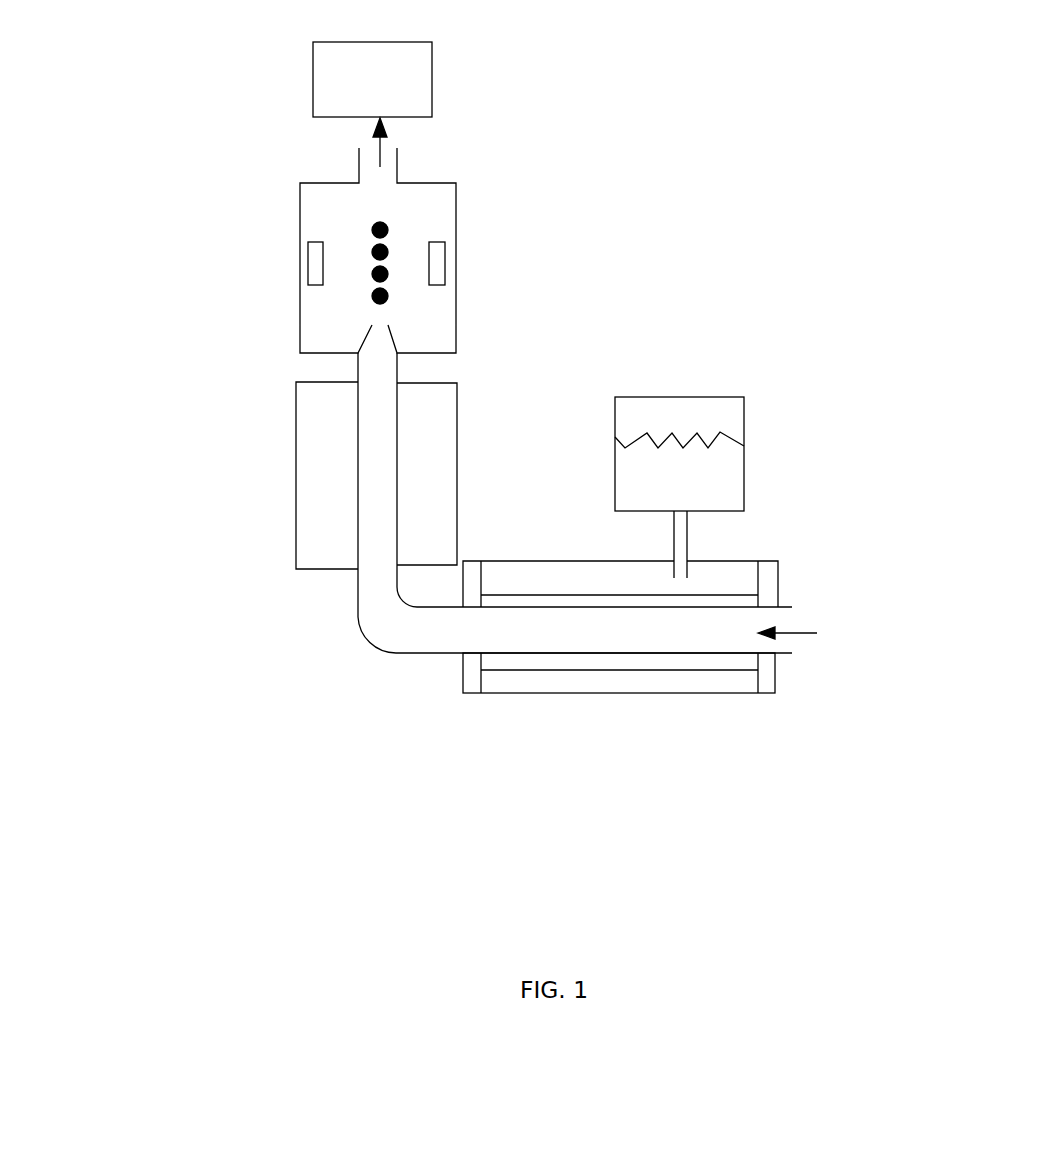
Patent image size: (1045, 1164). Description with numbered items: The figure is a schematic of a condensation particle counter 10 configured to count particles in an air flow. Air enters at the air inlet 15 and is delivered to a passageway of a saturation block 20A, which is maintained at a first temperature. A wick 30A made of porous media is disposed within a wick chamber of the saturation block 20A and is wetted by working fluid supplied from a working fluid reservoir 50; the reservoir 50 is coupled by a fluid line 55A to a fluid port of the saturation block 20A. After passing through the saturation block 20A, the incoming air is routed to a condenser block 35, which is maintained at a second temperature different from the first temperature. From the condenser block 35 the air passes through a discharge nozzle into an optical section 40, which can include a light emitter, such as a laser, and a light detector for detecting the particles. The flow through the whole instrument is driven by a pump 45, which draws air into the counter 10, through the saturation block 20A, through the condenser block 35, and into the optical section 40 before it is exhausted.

The condensation particle counter 10 is at (110, 218).
The air inlet 15 is at (768, 620).
The saturation block 20A is at (750, 685).
The wick 30A is at (603, 662).
The condenser block 35 is at (296, 452).
The optical section 40 is at (456, 266).
The pump 45 is at (432, 78).
The working fluid reservoir 50 is at (744, 448).
The fluid line 55A is at (675, 550).